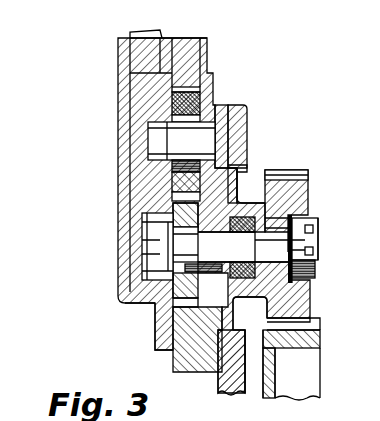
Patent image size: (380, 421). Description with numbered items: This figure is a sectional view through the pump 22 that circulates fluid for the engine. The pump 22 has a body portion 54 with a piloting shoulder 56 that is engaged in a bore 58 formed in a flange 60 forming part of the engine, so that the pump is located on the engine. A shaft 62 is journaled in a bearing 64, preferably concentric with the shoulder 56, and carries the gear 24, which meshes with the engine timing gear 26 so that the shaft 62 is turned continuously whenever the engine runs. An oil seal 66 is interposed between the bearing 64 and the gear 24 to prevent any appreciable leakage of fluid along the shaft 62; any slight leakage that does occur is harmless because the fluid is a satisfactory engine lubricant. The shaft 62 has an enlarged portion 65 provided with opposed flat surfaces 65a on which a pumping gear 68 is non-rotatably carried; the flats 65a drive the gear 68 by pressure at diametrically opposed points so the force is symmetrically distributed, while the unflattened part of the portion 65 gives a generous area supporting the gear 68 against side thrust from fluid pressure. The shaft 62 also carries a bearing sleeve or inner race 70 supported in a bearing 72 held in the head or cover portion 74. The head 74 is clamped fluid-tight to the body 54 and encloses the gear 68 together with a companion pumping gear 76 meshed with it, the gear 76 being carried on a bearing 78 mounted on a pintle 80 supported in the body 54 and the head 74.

The pump 22 is at (163, 362).
The gear 24 is at (302, 211).
The timing gear 26 is at (310, 348).
The body portion 54 is at (198, 52).
The piloting shoulder 56 is at (224, 110).
The bore 58 is at (246, 185).
The flange 60 is at (220, 105).
The shaft 62 is at (277, 250).
The bearing 64 is at (181, 335).
The enlarged portion 65 is at (187, 213).
The flat surfaces 65a is at (180, 242).
The oil seal 66 is at (302, 197).
The pumping gear 68 is at (162, 340).
The bearing sleeve or inner race 70 is at (156, 258).
The bearing 72 is at (150, 300).
The head or cover portion 74 is at (158, 317).
The companion pumping gear 76 is at (175, 102).
The bearing 78 is at (180, 110).
The pintle 80 is at (165, 142).